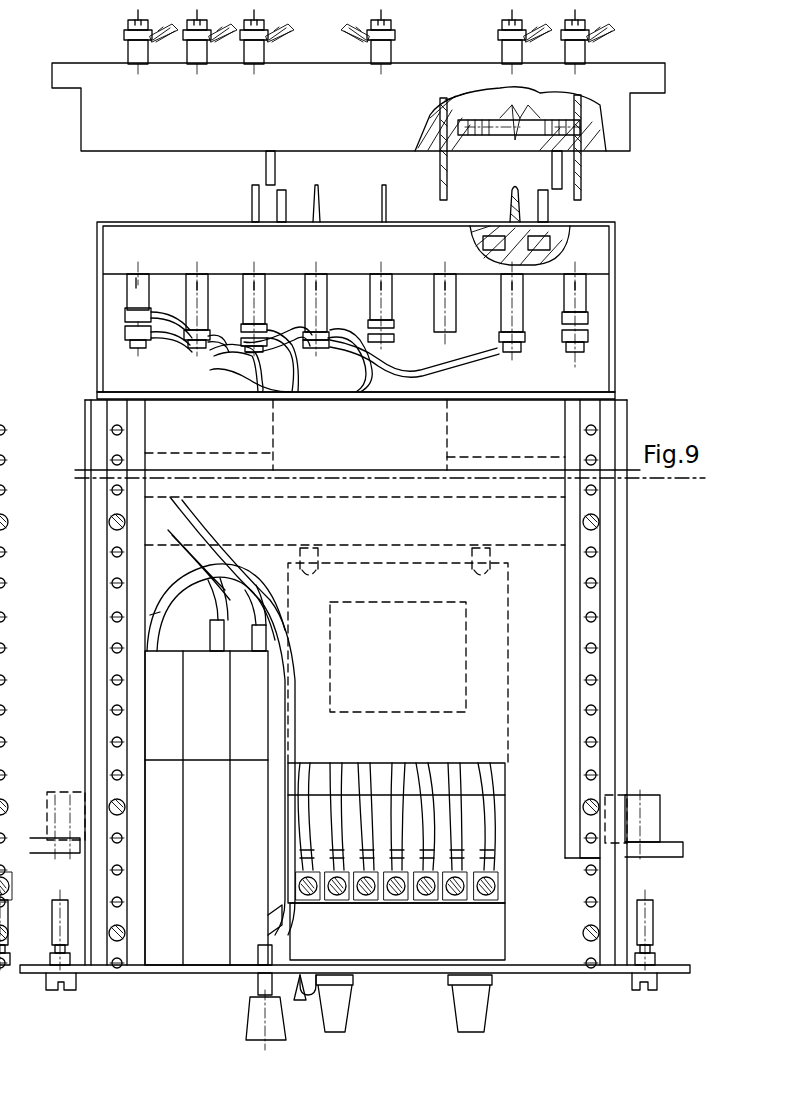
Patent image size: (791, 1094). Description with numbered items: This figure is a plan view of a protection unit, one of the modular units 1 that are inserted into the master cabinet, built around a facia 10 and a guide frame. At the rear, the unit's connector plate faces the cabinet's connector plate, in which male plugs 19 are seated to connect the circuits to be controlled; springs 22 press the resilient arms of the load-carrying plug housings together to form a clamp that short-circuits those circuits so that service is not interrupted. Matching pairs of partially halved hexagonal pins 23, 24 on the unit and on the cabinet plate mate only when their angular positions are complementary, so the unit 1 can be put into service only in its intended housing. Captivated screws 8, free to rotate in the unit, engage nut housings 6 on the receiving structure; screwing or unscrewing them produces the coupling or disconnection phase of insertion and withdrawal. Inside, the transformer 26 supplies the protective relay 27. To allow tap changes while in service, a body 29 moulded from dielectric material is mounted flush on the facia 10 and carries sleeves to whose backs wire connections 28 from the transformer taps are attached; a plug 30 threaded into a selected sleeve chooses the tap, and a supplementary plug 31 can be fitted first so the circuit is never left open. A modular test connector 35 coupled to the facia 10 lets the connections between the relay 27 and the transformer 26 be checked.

The modular unit 1 is at (632, 574).
The nut housing 6 is at (650, 813).
The captivated screw 8 is at (650, 928).
The facia 10 is at (665, 975).
The male plug 19 is at (583, 170).
The spring 22 is at (548, 130).
The hexagonal pin 23 is at (279, 200).
The hexagonal pin 24 is at (285, 160).
The transformer 26 is at (483, 717).
The protective device or relay 27 is at (312, 432).
The wire connections 28 is at (490, 890).
The moulded body 29 is at (410, 948).
The plug 30 is at (318, 985).
The supplementary plug 31 is at (255, 1018).
The test connector 35 is at (173, 930).